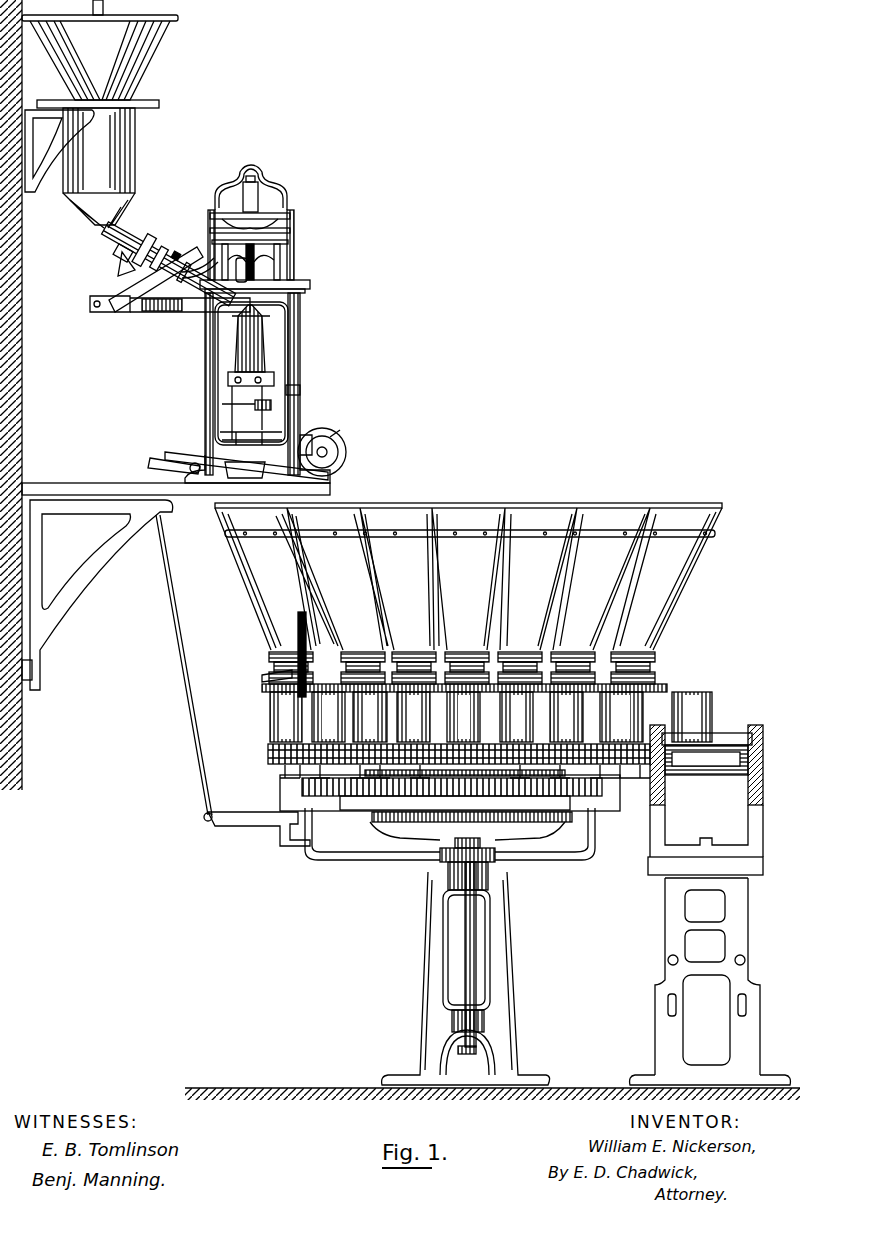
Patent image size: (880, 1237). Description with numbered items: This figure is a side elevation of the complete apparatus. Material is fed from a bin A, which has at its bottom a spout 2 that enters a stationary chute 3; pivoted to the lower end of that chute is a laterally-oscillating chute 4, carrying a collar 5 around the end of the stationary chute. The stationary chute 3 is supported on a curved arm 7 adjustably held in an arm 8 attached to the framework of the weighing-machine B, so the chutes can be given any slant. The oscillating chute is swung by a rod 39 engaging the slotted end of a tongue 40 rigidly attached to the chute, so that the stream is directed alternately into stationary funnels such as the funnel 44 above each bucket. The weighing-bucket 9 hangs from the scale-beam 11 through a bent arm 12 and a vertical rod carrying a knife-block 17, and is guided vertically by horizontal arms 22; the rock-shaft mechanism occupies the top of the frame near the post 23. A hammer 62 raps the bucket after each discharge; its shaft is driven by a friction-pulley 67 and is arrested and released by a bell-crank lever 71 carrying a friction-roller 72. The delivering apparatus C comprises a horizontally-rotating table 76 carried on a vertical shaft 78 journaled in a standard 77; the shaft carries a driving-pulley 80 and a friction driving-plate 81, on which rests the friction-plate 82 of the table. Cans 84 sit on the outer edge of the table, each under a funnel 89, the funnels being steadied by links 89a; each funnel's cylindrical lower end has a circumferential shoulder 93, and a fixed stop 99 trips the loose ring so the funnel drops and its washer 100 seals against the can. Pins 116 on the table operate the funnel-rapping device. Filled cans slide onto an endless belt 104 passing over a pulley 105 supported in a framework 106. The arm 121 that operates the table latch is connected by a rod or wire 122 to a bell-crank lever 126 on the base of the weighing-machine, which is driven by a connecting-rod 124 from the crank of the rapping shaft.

The bin A is at (160, 60).
The weighing-machine B is at (300, 327).
The delivering apparatus C is at (680, 618).
The spout 2 is at (98, 232).
The stationary chute 3 is at (116, 258).
The laterally-oscillating chute 4 is at (143, 298).
The collar 5 is at (164, 246).
The curved arm 7 is at (108, 290).
The arm 8 is at (124, 314).
The weighing-bucket 9 is at (232, 395).
The scale-beam 11 is at (257, 270).
The bent arm 12 is at (262, 328).
The knife-block 17 is at (245, 471).
The horizontal arm 22 is at (246, 413).
The post 23 is at (260, 200).
The rod 39 is at (200, 268).
The tongue 40 is at (178, 248).
The stationary funnel 44 is at (270, 355).
The hammer 62 is at (300, 390).
The friction-pulley 67 is at (346, 452).
The bell-crank lever 71 is at (310, 438).
The friction-roller 72 is at (335, 437).
The rotating table 76 is at (268, 752).
The standard 77 is at (428, 945).
The vertical shaft 78 is at (478, 960).
The driving-pulley 80 is at (566, 832).
The friction driving-plate 81 is at (450, 798).
The friction-plate 82 is at (565, 772).
The cans 84 is at (270, 718).
The funnel 89 is at (405, 516).
The links 89a is at (442, 530).
The circumferential shoulder 93 is at (268, 664).
The fixed stop 99 is at (266, 680).
The washer 100 is at (668, 692).
The endless belt 104 is at (707, 737).
The pulley 105 is at (706, 760).
The framework 106 is at (763, 838).
The pins 116 is at (284, 770).
The arm 121 is at (238, 828).
The rod or wire 122 is at (188, 708).
The connecting-rod 124 is at (326, 470).
The bell-crank lever 126 is at (190, 466).